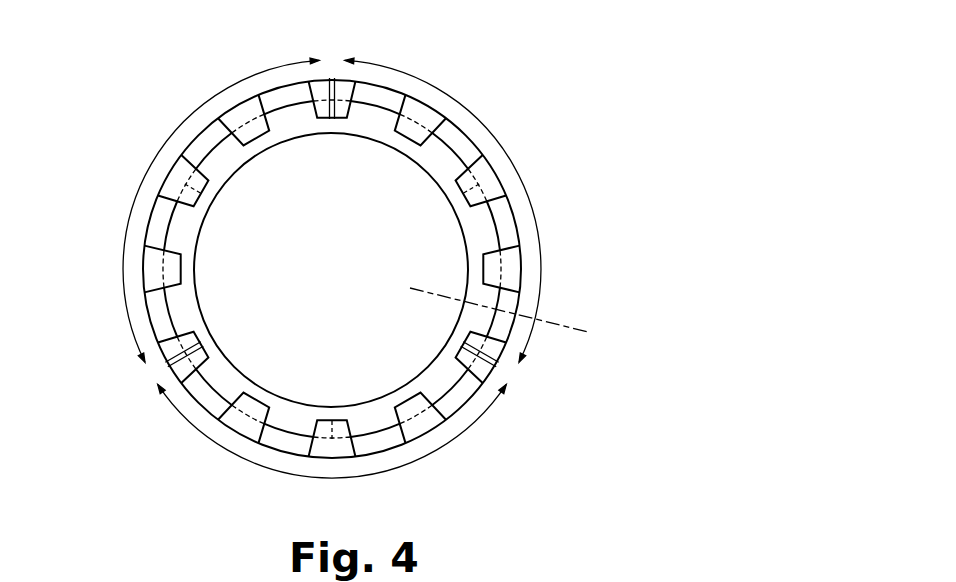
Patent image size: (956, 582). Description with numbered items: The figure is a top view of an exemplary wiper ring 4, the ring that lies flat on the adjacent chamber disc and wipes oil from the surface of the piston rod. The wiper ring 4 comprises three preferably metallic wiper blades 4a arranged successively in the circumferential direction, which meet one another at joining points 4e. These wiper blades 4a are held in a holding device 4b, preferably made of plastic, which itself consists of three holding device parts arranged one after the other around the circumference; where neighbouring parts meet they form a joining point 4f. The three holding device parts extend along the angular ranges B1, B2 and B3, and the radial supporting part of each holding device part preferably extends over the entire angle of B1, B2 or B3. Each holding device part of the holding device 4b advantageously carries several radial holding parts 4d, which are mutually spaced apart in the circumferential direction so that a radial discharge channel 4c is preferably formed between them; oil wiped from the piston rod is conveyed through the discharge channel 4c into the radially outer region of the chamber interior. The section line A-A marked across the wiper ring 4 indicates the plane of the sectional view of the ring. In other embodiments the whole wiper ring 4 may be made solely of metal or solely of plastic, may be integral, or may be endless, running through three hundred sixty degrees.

The wiper ring 4 is at (587, 88).
The wiper blades 4a is at (357, 130).
The holding device 4b is at (476, 144).
The radial discharge channel 4c is at (468, 153).
The radial holding part 4d is at (450, 135).
The joining points 4e is at (473, 182).
The joining point 4f is at (329, 78).
The angular extent of first holding device part B1 is at (218, 88).
The angular extent of second holding device part B2 is at (442, 453).
The angular extent of third holding device part B3 is at (533, 207).
The section line A- A is at (425, 288).